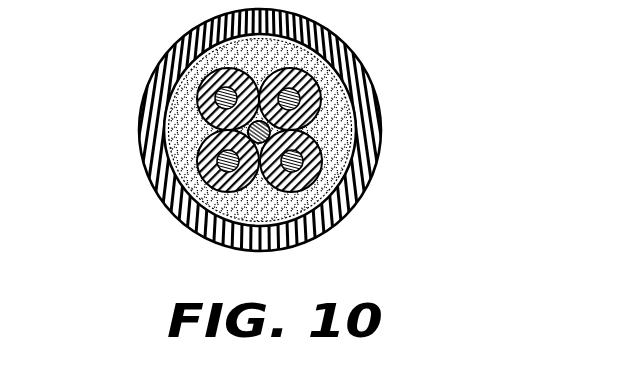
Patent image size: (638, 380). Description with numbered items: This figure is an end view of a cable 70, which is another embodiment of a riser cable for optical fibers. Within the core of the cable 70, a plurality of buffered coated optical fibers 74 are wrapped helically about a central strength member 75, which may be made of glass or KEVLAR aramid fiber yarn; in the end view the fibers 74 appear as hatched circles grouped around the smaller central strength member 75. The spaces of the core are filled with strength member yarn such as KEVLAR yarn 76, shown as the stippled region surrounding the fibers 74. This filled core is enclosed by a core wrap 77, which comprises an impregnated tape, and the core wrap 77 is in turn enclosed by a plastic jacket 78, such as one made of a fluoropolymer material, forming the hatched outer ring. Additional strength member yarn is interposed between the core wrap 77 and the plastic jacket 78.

The cable 70 is at (407, 130).
The buffered coated optical fibers 74 is at (200, 94).
The central strength member 75 is at (249, 133).
The KEVLAR yarn 76 is at (302, 44).
The core wrap 77 is at (348, 98).
The plastic jacket 78 is at (193, 37).